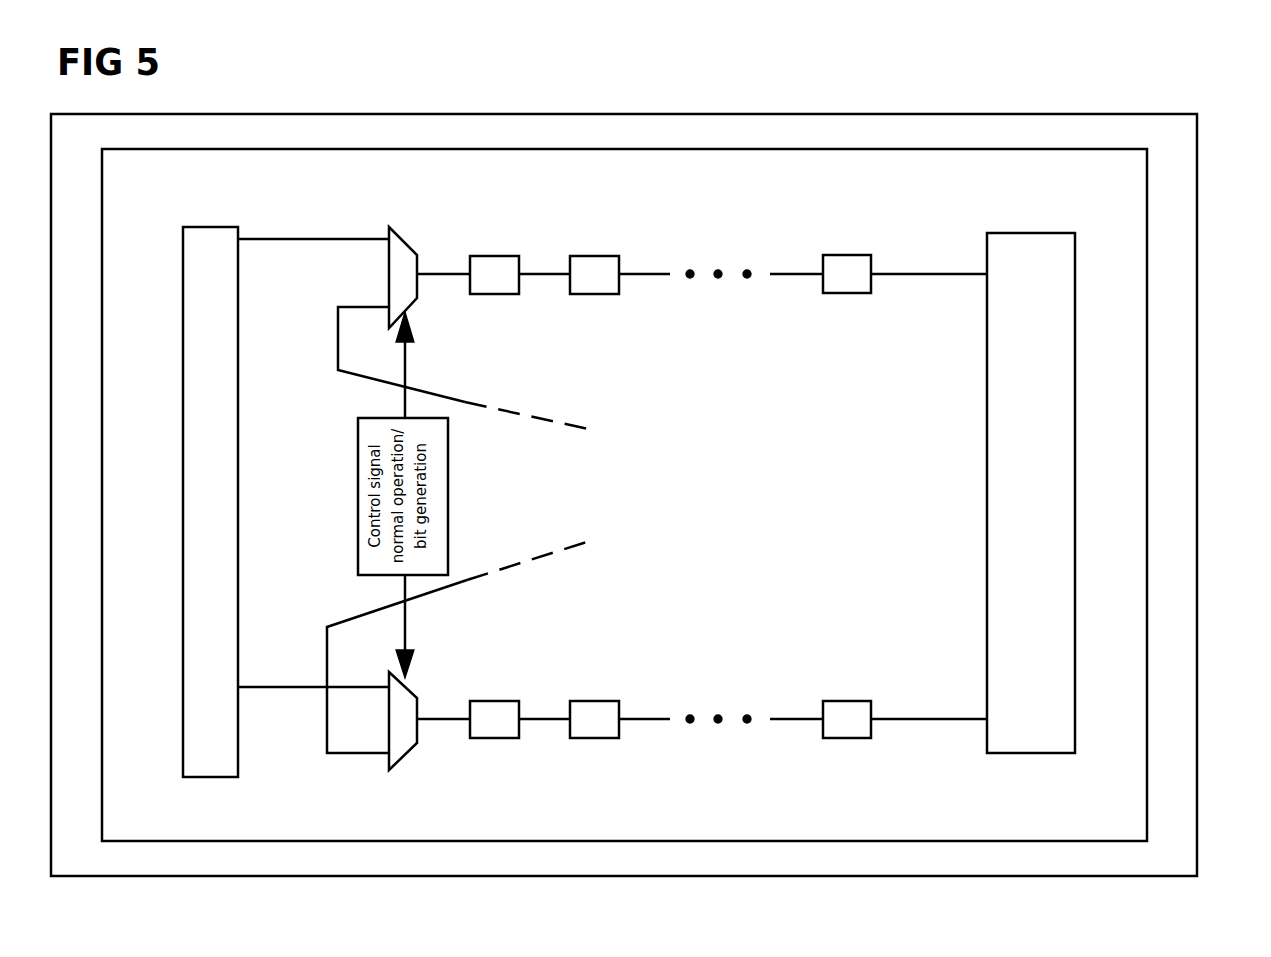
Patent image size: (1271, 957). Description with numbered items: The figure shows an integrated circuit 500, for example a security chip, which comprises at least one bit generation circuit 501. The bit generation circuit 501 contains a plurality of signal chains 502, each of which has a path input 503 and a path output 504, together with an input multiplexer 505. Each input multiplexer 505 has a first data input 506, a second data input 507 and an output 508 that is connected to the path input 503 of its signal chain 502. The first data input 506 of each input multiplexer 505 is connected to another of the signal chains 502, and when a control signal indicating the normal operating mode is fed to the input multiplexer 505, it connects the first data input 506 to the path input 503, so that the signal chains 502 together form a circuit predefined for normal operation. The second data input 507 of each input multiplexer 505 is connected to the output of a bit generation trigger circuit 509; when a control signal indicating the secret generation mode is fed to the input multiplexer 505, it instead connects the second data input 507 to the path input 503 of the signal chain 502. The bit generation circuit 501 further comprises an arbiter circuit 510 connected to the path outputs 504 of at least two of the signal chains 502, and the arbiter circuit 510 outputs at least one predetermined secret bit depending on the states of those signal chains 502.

The integrated circuit 500 is at (1170, 114).
The bit generation circuit 501 is at (1147, 208).
The signal chain 502 is at (672, 242).
The path input 503 is at (458, 268).
The path output 504 is at (873, 264).
The input multiplexer 505 is at (398, 229).
The first data input 506 is at (388, 313).
The second data input 507 is at (388, 242).
The output 508 is at (420, 286).
The bit generation trigger circuit 509 is at (215, 227).
The arbiter circuit 510 is at (1034, 233).